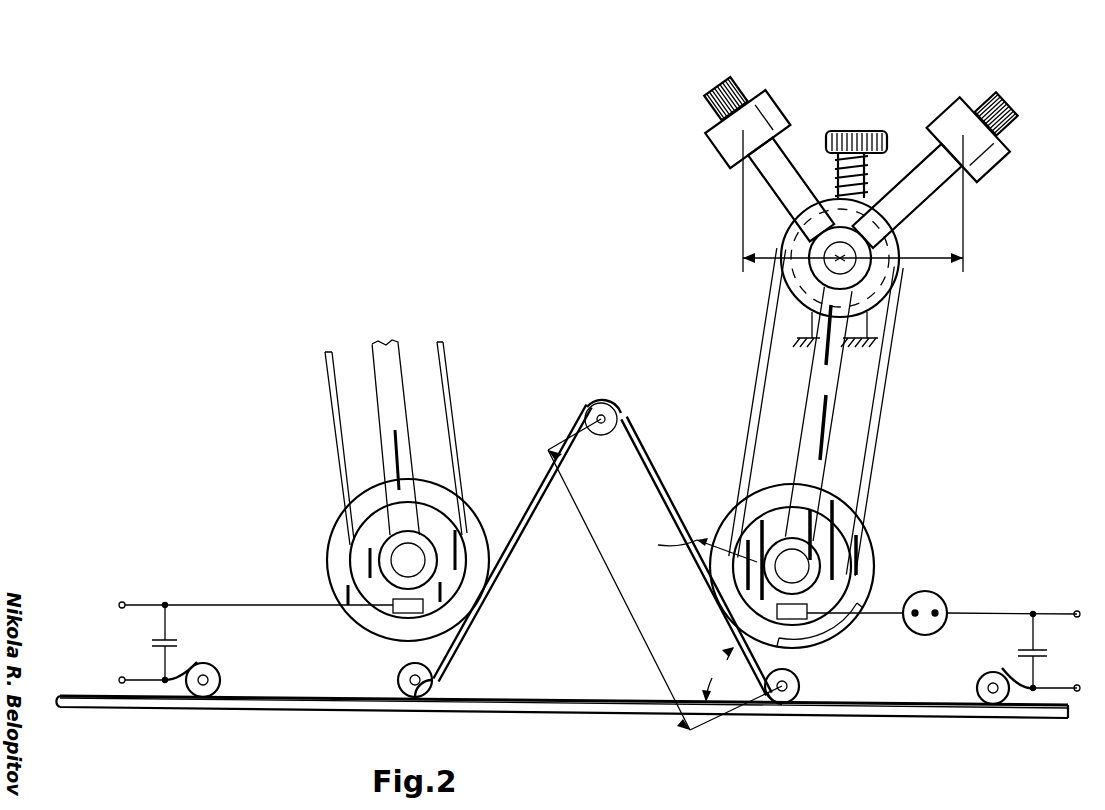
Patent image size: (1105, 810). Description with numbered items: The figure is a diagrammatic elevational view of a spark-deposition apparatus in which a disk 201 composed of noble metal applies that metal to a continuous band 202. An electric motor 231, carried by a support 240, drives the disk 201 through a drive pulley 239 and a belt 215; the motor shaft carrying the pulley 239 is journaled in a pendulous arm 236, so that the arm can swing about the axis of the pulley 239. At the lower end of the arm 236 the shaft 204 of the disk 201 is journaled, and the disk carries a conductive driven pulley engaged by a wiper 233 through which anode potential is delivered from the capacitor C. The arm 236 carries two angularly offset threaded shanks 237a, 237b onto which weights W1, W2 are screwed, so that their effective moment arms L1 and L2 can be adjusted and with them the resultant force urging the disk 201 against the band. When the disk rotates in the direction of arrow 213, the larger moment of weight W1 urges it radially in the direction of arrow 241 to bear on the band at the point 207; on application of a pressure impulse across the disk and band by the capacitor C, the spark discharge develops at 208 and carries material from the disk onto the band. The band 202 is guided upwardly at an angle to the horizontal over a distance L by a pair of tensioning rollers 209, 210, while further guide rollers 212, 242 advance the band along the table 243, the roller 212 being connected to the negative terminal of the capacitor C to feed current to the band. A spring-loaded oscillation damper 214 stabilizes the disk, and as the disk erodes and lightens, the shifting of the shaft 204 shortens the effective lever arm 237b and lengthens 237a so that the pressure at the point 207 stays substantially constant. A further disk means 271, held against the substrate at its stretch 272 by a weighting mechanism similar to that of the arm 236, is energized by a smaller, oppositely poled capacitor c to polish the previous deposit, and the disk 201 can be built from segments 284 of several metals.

The disk 201 is at (882, 567).
The continuous band 202 is at (900, 703).
The shaft of the disk 204 is at (783, 562).
The point of contact 207 is at (728, 612).
The spark discharge location 208 is at (736, 581).
The tensioning roller 209 is at (600, 416).
The tensioning roller 210 is at (789, 704).
The guide roller 212 is at (997, 704).
The arrow indicating disk rotation 213 is at (884, 549).
The spring-loaded oscillation damper 214 is at (858, 131).
The belt 215 is at (879, 420).
The electric motor 231 is at (893, 283).
The wiper 233 is at (800, 620).
The pendulous arm 236 is at (812, 404).
The shank 237a is at (1010, 106).
The shank 237b is at (712, 82).
The drive pulley 239 is at (787, 293).
The support 240 is at (862, 326).
The arrow indicating radial urging direction 241 is at (220, 666).
The guide roller 242 is at (398, 680).
The table 243 is at (497, 718).
The further disk means 271 is at (332, 556).
The stretch of the substrate 272 is at (507, 557).
The segments 284 is at (854, 627).
The distance L is at (665, 574).
The moment arm L1 is at (901, 205).
The moment arm L2 is at (791, 203).
The weight W1 is at (1000, 162).
The weight W2 is at (703, 142).
The switch S is at (940, 596).
The capacitor C is at (1020, 650).
The smaller capacitor c is at (152, 643).